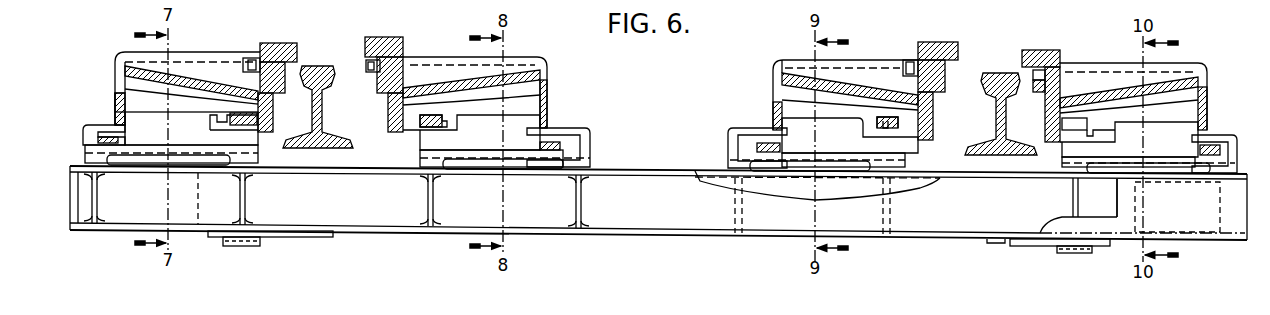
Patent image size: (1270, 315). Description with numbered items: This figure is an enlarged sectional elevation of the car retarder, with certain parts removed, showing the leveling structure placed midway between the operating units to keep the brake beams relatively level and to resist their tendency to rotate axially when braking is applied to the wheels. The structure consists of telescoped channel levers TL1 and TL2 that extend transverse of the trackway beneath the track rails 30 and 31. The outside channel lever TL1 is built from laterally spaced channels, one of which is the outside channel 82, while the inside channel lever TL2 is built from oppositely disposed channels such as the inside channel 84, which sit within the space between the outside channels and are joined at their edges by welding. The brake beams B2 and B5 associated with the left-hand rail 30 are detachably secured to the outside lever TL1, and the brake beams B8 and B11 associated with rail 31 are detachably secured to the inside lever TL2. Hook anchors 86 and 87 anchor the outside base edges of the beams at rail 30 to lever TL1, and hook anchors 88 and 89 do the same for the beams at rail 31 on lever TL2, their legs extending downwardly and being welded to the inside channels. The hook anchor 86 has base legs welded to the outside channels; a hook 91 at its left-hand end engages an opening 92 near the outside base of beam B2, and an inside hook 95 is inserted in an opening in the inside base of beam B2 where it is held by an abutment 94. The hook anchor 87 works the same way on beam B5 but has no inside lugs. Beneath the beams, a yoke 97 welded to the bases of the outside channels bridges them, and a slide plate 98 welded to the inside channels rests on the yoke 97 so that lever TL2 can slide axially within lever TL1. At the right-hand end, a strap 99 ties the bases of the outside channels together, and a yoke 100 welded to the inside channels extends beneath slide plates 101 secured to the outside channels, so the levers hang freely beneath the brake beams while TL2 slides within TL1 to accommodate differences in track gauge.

The outside channel 82 is at (407, 222).
The inside channel 84 is at (1207, 222).
The hook anchor 86 is at (137, 149).
The hook anchor 87 is at (478, 151).
The hook anchor 88 is at (830, 153).
The hook anchor 89 is at (1158, 158).
The hook 91 is at (103, 125).
The opening 92 is at (118, 114).
The abutment 94 is at (213, 114).
The inside hook 95 is at (241, 116).
The yoke 97 is at (249, 246).
The slide plate 98 is at (308, 237).
The strap 99 is at (988, 241).
The yoke 100 is at (1086, 253).
The slide plate 101 is at (1031, 246).
The track rail 30 is at (316, 65).
The track rail 31 is at (993, 72).
The brake beam B2 is at (181, 90).
The brake beam B5 is at (477, 93).
The brake beam B8 is at (843, 96).
The brake beam B11 is at (1129, 98).
The outside channel lever TL1 is at (640, 218).
The inside channel lever TL2 is at (1204, 230).